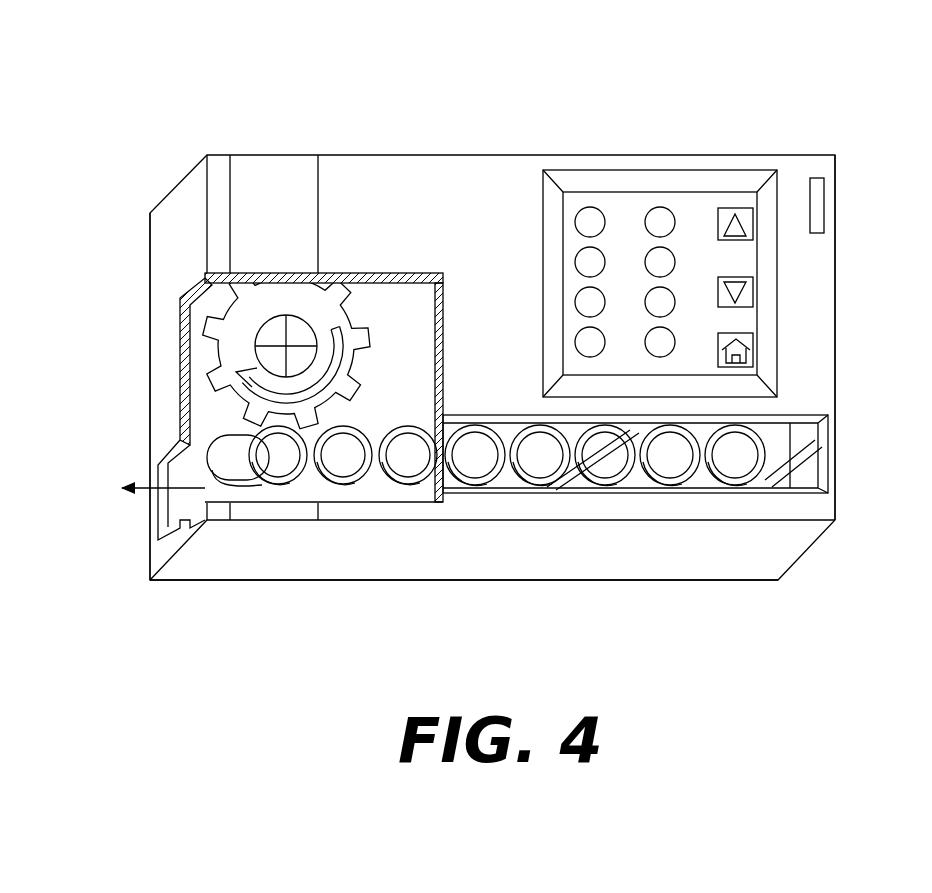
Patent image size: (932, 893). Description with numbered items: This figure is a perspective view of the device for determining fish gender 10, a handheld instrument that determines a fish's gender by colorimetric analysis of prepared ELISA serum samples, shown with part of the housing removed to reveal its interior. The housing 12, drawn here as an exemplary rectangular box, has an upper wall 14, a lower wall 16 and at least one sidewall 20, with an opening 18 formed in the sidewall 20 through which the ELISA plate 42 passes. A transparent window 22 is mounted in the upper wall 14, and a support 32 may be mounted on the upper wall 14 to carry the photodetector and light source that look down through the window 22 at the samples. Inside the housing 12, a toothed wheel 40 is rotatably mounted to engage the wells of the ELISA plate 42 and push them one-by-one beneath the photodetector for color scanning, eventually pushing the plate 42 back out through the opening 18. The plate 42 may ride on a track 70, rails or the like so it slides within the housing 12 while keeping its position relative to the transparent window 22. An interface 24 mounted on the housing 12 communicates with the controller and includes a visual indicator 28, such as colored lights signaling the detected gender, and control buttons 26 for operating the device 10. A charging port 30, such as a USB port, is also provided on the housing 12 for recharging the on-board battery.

The device for determining fish gender 10 is at (135, 140).
The housing 12 is at (492, 150).
The upper wall 14 is at (815, 343).
The lower wall 16 is at (142, 589).
The opening 18 is at (165, 441).
The sidewall 20 is at (165, 230).
The transparent window 22 is at (812, 480).
The interface 24 is at (664, 161).
The control buttons 26 is at (737, 198).
The visual indicator 28 is at (587, 198).
The charging port 30 is at (816, 178).
The support 32 is at (275, 178).
The toothed wheel 40 is at (343, 327).
The ELISA plate 42 is at (378, 411).
The track 70 is at (163, 473).